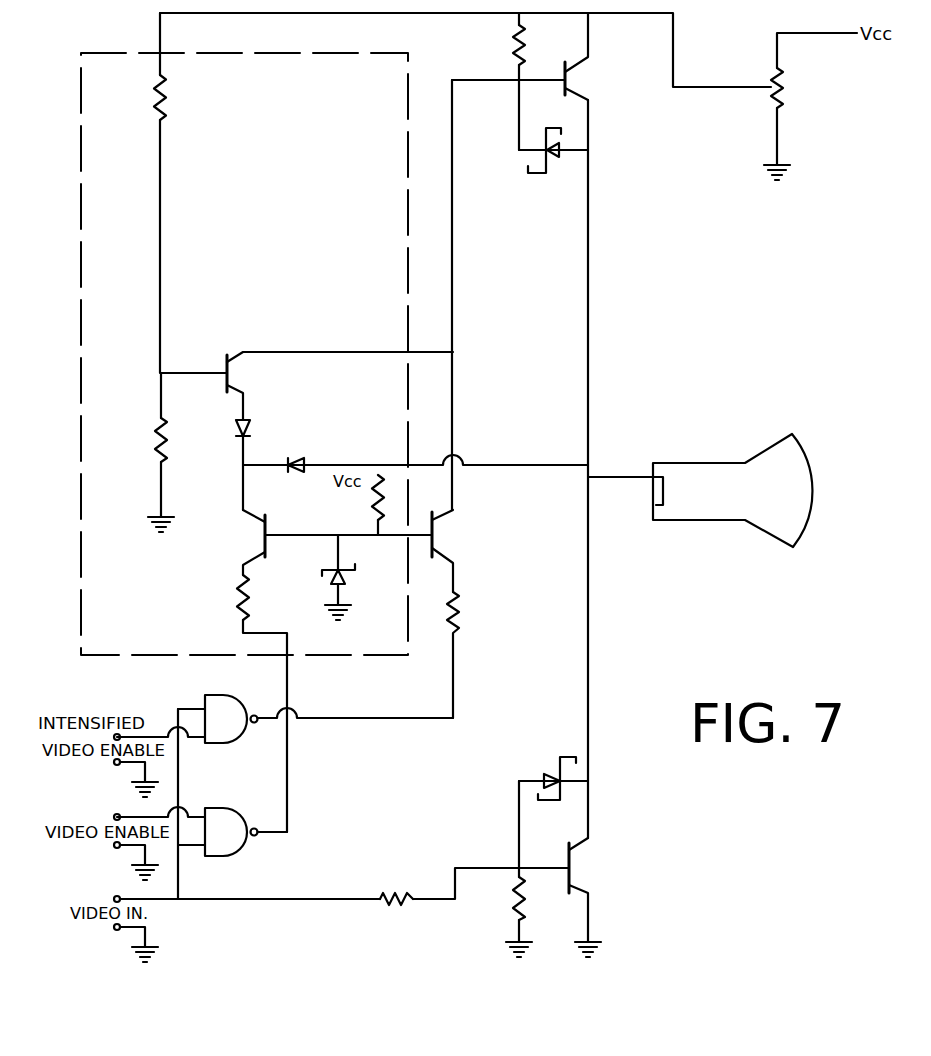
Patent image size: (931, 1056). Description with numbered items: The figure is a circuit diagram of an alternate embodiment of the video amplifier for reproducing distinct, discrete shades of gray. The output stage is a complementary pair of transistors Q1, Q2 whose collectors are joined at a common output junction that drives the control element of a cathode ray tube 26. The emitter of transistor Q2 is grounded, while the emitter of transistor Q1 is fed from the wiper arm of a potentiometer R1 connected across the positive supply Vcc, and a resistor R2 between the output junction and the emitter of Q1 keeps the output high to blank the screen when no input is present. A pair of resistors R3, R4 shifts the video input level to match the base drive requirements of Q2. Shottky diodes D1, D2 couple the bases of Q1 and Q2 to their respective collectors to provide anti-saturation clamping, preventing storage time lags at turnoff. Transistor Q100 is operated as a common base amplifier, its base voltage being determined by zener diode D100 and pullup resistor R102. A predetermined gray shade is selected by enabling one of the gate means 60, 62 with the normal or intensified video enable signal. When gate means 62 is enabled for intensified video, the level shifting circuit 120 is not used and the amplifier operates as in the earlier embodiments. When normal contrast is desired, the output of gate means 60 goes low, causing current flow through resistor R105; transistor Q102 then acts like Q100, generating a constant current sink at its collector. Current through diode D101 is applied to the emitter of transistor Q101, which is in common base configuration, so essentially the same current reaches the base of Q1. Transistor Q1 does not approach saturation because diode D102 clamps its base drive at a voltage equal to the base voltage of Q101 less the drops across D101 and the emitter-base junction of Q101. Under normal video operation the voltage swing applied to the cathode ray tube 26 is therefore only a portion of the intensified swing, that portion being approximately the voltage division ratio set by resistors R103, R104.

The level shifting circuit 120 is at (82, 190).
The cathode ray tube 26 is at (731, 462).
The gate means 62 is at (224, 696).
The gate means 60 is at (229, 809).
The potentiometer R1 is at (784, 104).
The resistor R2 is at (513, 36).
The resistor R3 is at (399, 896).
The resistor R4 is at (513, 898).
The pullup resistor R102 is at (374, 495).
The resistor R103 is at (166, 97).
The resistor R104 is at (153, 433).
The resistor R105 is at (236, 599).
The transistor Q1 is at (568, 84).
The transistor Q2 is at (574, 866).
The transistor Q100 is at (440, 544).
The transistor Q101 is at (236, 382).
The transistor Q102 is at (258, 532).
The shottky diode D1 is at (556, 162).
The shottky diode D2 is at (553, 770).
The zener diode D100 is at (342, 574).
The diode D101 is at (250, 425).
The diode D102 is at (296, 463).